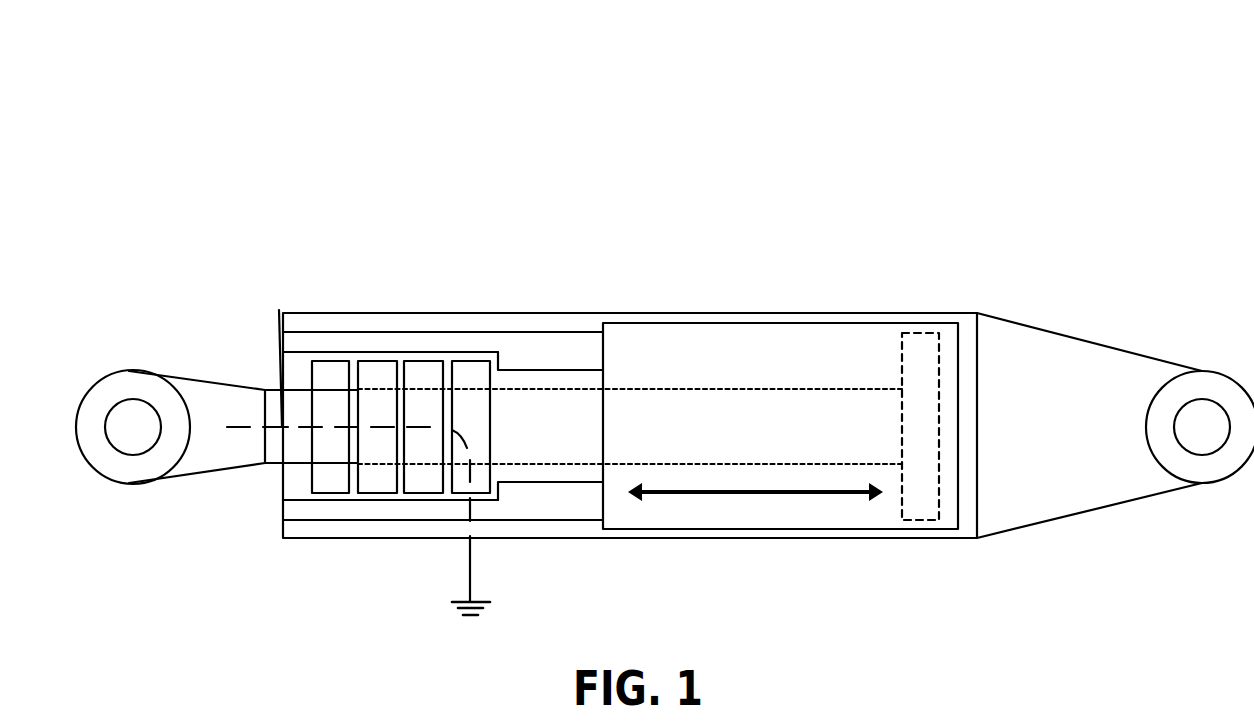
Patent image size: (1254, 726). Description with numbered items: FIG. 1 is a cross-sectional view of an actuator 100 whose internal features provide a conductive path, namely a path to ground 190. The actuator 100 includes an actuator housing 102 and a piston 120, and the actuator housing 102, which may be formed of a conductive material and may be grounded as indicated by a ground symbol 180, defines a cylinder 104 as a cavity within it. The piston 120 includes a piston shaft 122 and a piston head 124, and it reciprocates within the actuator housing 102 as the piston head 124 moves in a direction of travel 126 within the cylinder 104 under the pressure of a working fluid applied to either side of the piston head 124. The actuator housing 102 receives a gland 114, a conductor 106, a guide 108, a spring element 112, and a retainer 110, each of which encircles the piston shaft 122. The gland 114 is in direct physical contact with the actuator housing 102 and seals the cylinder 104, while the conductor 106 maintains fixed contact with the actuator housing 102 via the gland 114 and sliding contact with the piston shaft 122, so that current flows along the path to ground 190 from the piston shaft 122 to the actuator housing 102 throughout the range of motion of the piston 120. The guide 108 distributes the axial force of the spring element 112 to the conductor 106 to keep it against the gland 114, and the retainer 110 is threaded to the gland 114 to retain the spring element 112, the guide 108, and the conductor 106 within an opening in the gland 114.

The actuator 100 is at (1088, 52).
The actuator housing 102 is at (566, 322).
The cylinder 104 is at (782, 530).
The conductor 106 is at (469, 361).
The guide 108 is at (424, 361).
The retainer 110 is at (330, 493).
The spring element 112 is at (377, 493).
The gland 114 is at (522, 500).
The piston 120 is at (150, 347).
The piston shaft 122 is at (273, 463).
The piston head 124 is at (920, 352).
The direction of travel 126 is at (748, 492).
The ground symbol 180 is at (471, 578).
The path to ground 190 is at (279, 310).